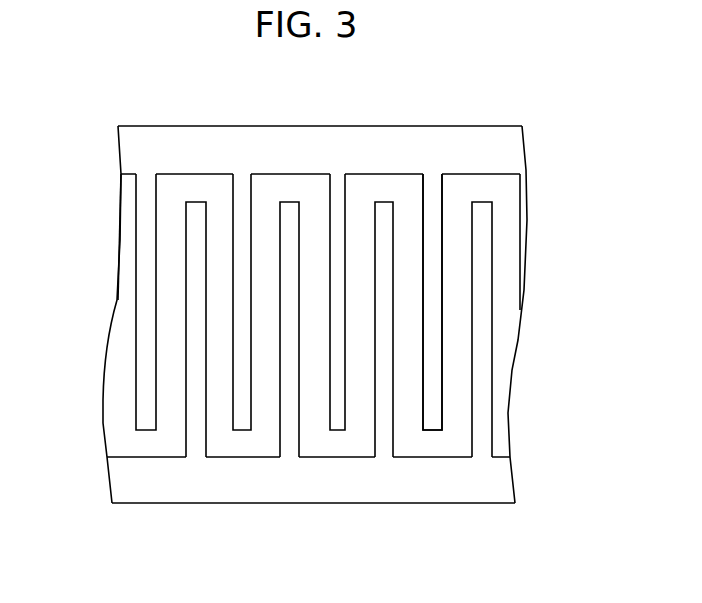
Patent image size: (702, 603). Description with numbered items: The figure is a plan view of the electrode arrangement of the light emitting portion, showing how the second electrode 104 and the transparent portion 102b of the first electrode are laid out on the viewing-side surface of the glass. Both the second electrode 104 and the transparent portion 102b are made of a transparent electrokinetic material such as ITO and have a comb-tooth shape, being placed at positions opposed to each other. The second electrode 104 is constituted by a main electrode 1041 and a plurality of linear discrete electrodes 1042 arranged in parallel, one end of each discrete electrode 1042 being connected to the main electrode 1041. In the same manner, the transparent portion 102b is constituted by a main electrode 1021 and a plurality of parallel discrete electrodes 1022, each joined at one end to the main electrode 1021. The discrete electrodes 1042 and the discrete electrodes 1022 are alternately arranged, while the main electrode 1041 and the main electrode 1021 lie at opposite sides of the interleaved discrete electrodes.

The main electrode of the transparent portion 1021 is at (488, 147).
The discrete electrodes of the transparent portion 1022 is at (146, 220).
The transparent portion 102b is at (433, 263).
The second electrode 104 is at (385, 353).
The main electrode of the second electrode 1041 is at (123, 505).
The discrete electrodes of the second electrode 1042 is at (195, 433).